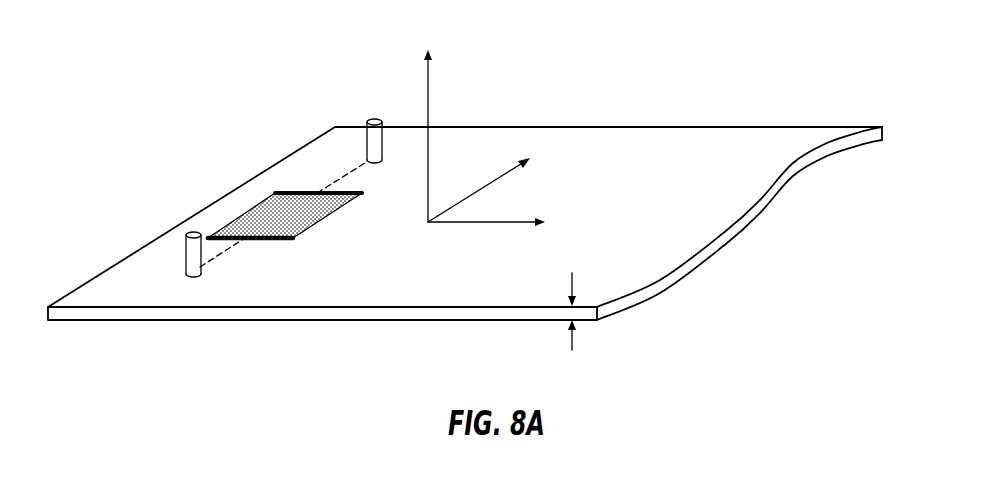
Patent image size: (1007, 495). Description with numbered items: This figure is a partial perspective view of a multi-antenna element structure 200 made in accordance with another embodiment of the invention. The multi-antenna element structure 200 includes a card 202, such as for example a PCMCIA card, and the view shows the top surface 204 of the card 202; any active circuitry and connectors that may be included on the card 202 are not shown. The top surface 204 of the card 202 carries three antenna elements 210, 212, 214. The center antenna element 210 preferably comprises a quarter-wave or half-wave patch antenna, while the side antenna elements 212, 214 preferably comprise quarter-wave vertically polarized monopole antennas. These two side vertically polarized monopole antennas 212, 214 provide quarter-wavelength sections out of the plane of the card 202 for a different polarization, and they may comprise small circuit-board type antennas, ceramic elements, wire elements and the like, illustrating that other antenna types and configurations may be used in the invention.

The multi-antenna element structure 200 is at (465, 187).
The card 202 is at (511, 117).
The top surface 204 is at (712, 137).
The center antenna element 210 is at (260, 216).
The side antenna element 212 is at (367, 142).
The side antenna element 214 is at (187, 257).